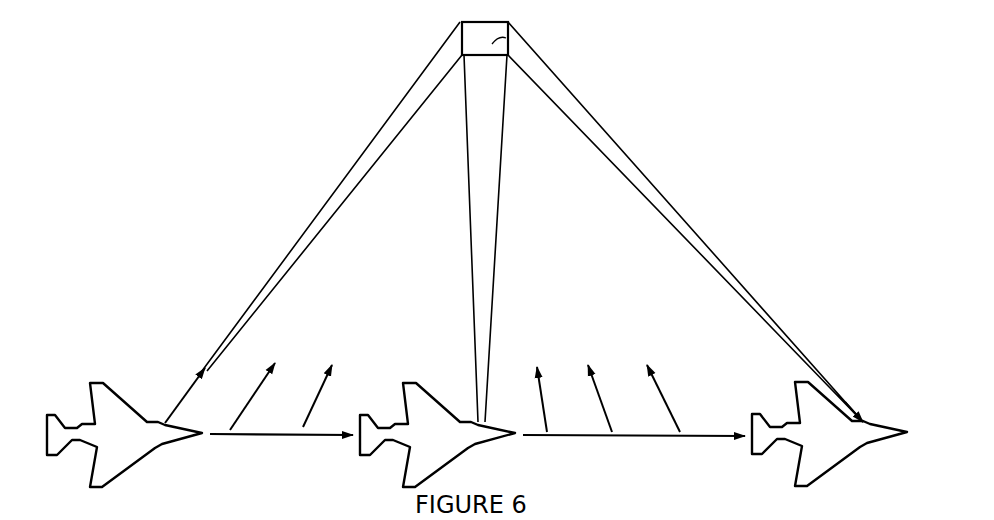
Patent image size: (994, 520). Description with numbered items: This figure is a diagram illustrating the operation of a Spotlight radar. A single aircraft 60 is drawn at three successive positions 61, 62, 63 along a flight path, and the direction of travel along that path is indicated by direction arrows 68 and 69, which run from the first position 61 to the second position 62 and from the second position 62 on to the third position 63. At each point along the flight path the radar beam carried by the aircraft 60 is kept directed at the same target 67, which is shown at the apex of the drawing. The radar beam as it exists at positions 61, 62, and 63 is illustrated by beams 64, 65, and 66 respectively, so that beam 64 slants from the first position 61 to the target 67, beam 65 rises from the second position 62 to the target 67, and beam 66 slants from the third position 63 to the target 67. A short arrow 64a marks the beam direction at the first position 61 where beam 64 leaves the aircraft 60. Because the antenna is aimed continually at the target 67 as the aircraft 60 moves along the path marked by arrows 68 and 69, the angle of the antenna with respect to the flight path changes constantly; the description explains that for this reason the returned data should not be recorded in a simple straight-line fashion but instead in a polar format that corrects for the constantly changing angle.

The aircraft 60 is at (477, 421).
The first position 61 is at (150, 450).
The second position 62 is at (461, 450).
The third position 63 is at (858, 447).
The radar beam 64 is at (250, 307).
The beam direction arrow 64a is at (186, 392).
The radar beam 65 is at (487, 303).
The radar beam 66 is at (758, 303).
The target 67 is at (508, 26).
The direction arrow 68 is at (290, 436).
The direction arrow 69 is at (662, 436).